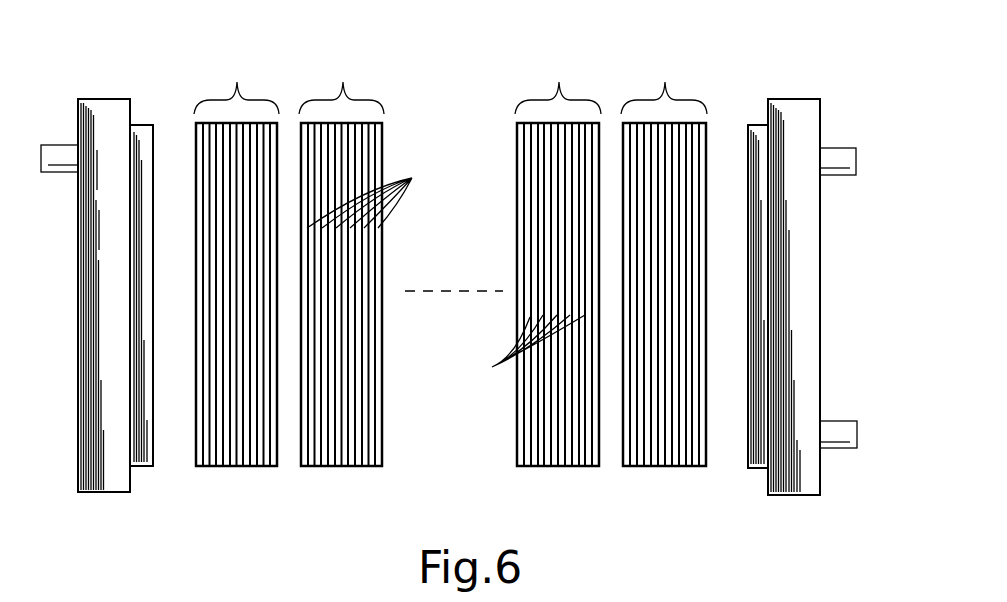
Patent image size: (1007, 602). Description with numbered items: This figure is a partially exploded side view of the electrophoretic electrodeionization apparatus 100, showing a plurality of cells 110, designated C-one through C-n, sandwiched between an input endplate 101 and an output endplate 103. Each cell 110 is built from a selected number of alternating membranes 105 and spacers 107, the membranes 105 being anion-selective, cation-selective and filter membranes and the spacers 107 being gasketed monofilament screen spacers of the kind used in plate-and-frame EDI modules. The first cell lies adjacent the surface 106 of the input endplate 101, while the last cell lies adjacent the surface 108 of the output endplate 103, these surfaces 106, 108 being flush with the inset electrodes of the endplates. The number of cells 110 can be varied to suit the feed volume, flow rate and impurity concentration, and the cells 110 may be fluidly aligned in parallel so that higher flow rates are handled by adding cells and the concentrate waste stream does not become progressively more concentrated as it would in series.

The electrophoretic electrodeionization apparatus 100 is at (772, 73).
The input endplate 101 is at (97, 107).
The output endplate 103 is at (810, 112).
The membranes 105 is at (381, 197).
The surface 106 is at (168, 432).
The spacers 107 is at (518, 347).
The surface 108 is at (734, 425).
The cells 110 is at (258, 483).